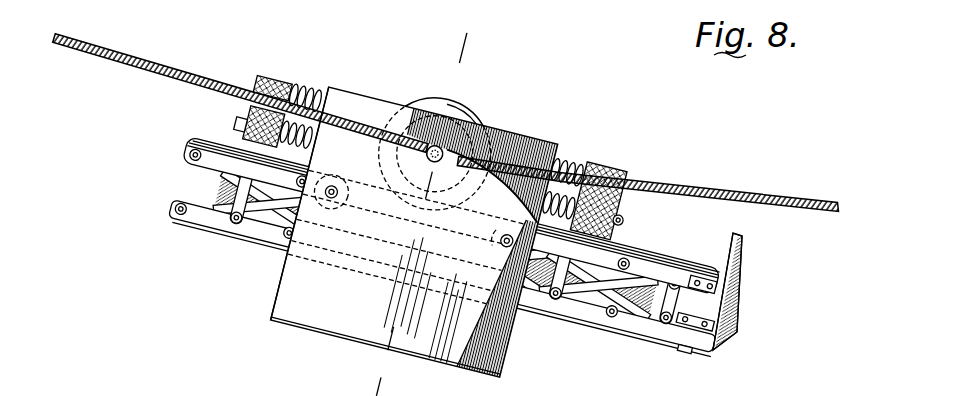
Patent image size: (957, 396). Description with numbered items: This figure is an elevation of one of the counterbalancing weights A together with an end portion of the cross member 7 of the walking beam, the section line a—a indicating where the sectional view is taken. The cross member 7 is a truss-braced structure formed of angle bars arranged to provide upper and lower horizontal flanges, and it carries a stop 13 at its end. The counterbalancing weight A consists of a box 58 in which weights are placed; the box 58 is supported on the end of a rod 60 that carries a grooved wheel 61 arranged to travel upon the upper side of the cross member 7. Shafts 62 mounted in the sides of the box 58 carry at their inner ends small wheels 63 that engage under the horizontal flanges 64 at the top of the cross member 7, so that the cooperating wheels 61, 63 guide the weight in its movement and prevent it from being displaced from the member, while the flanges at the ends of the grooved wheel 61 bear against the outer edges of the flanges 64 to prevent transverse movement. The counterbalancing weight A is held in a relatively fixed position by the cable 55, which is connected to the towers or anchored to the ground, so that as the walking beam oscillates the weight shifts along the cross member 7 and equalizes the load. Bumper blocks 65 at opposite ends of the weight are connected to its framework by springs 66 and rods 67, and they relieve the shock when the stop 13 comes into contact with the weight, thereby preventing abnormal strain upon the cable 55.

The cross member 7 is at (640, 317).
The stop 13 is at (742, 237).
The cable 55 is at (135, 60).
The box 58 is at (492, 338).
The rod 60 is at (420, 140).
The grooved wheel 61 is at (470, 112).
The shaft 62 is at (337, 197).
The small wheel 63 is at (498, 243).
The flange 64 is at (645, 259).
The bumper block 65 is at (270, 77).
The spring 66 is at (313, 95).
The rod 67 is at (248, 113).
The counterbalancing weight A is at (303, 283).
The section line a is at (421, 204).